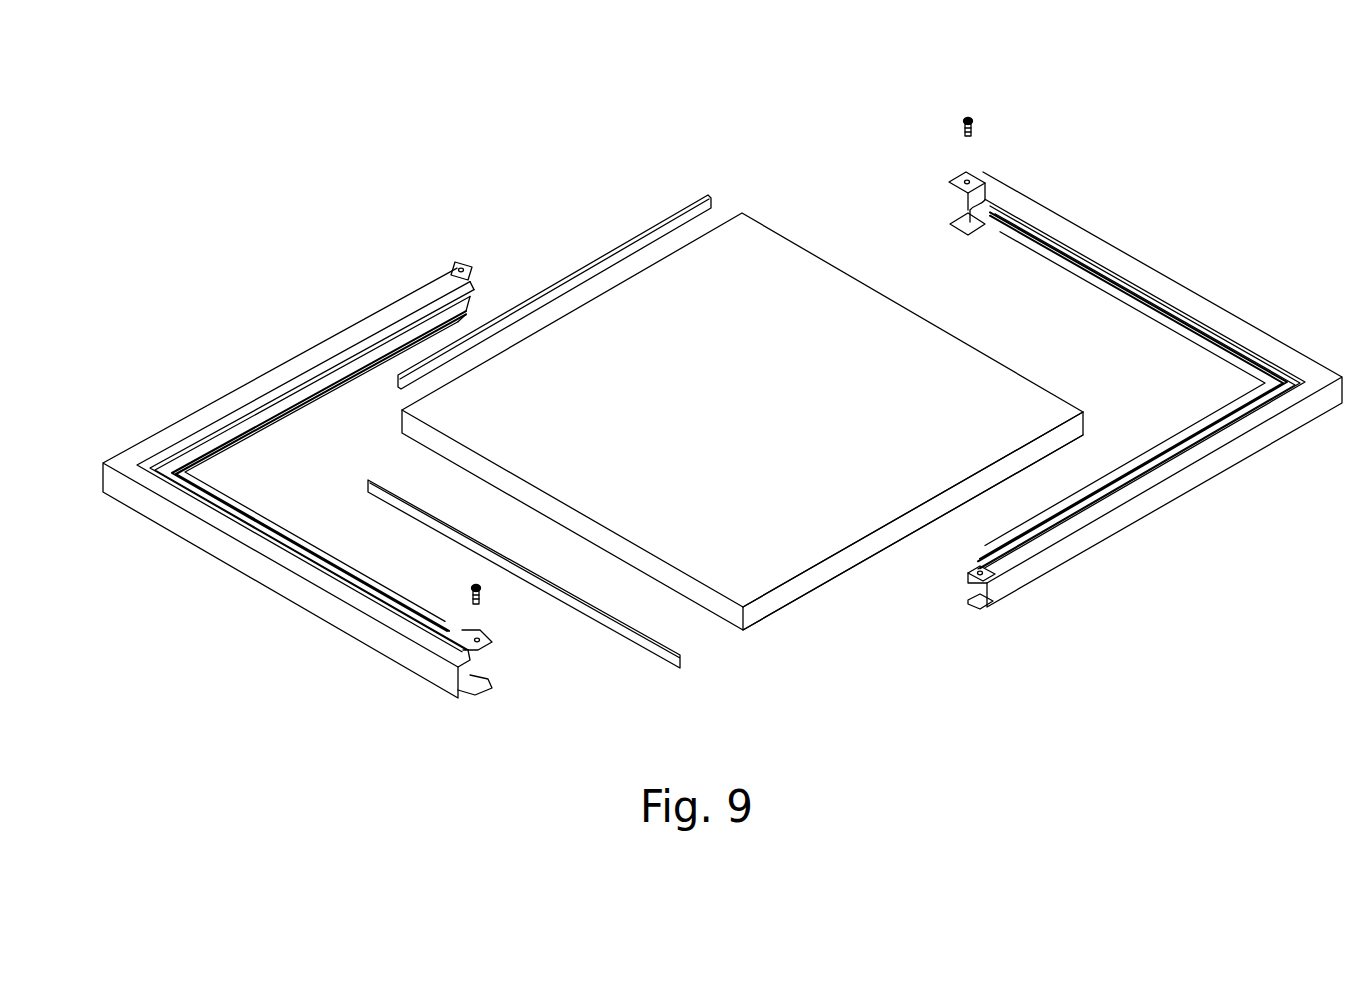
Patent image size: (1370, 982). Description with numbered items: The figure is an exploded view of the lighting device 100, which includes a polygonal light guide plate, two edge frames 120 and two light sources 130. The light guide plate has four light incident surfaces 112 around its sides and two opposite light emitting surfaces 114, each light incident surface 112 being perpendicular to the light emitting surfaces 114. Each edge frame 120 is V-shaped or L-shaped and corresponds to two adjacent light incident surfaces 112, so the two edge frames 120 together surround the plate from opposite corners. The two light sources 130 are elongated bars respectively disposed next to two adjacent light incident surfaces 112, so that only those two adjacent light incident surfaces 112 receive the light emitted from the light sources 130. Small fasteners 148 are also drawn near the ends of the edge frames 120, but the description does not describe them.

The lighting device 100 is at (217, 227).
The light incident surface 112 is at (426, 447).
The light emitting surface 114 is at (790, 563).
The edge frame 120 is at (268, 575).
The light source 130 is at (600, 617).
The screw 148 is at (978, 130).